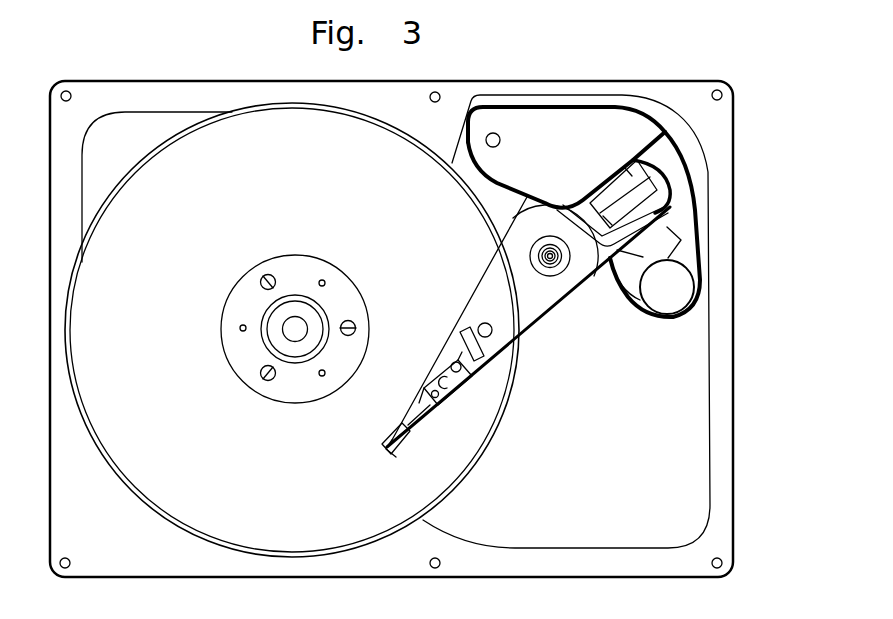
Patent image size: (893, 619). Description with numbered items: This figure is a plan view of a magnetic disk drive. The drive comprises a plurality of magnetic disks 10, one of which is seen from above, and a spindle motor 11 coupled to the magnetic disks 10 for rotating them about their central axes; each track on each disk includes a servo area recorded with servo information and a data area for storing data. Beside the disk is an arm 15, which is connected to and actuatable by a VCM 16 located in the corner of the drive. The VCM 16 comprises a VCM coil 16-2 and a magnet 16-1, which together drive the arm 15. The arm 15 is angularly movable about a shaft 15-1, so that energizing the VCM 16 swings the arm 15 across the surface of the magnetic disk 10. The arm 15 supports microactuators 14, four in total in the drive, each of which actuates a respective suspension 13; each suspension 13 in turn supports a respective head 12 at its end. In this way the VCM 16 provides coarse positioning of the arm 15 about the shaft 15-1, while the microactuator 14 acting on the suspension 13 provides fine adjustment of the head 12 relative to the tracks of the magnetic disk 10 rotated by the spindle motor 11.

The magnetic disk 10 is at (291, 172).
The spindle motor 11 is at (283, 327).
The head 12 is at (393, 457).
The suspension 13 is at (407, 421).
The microactuator 14 is at (458, 330).
The arm 15 is at (488, 283).
The shaft 15-1 is at (552, 266).
The VCM 16 is at (603, 92).
The magnet 16-1 is at (700, 260).
The VCM coil 16-2 is at (655, 167).